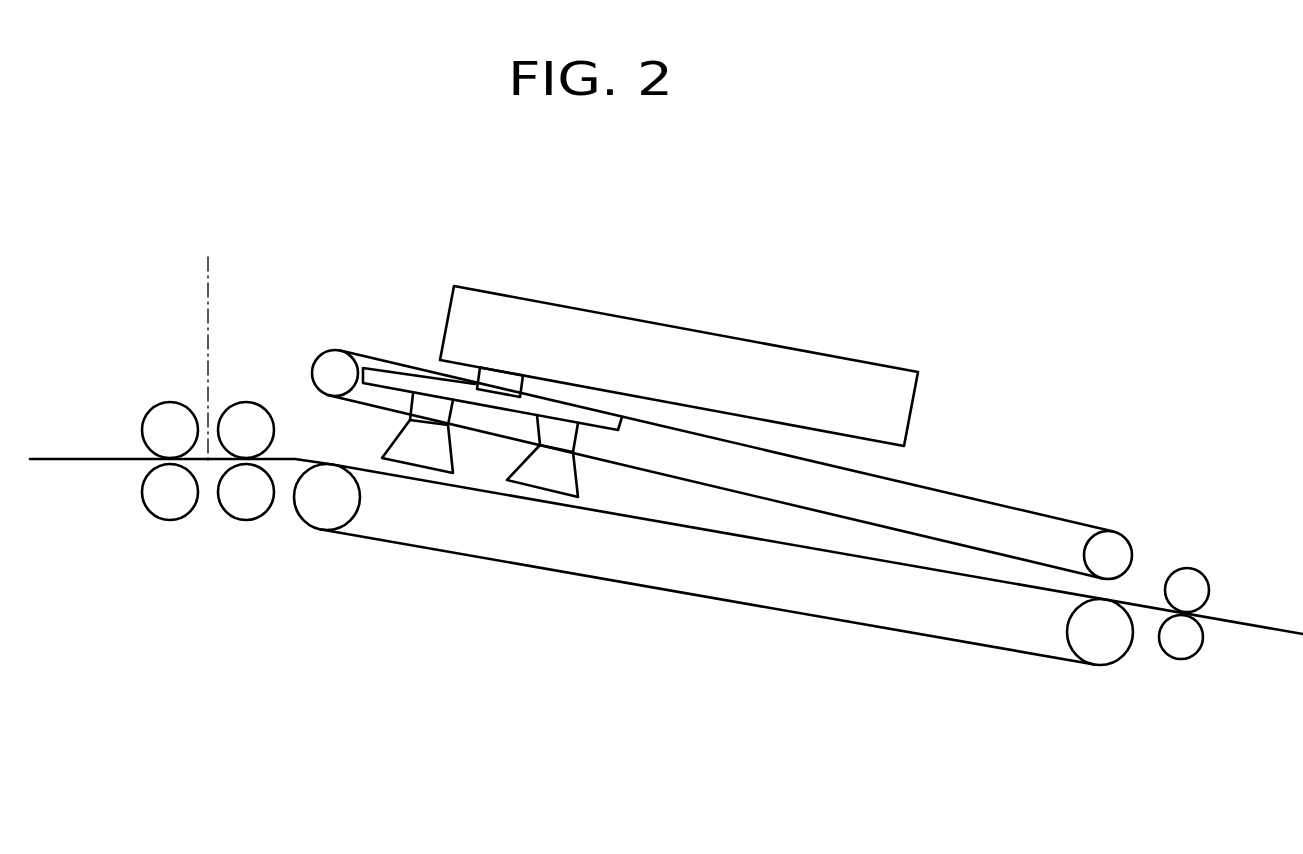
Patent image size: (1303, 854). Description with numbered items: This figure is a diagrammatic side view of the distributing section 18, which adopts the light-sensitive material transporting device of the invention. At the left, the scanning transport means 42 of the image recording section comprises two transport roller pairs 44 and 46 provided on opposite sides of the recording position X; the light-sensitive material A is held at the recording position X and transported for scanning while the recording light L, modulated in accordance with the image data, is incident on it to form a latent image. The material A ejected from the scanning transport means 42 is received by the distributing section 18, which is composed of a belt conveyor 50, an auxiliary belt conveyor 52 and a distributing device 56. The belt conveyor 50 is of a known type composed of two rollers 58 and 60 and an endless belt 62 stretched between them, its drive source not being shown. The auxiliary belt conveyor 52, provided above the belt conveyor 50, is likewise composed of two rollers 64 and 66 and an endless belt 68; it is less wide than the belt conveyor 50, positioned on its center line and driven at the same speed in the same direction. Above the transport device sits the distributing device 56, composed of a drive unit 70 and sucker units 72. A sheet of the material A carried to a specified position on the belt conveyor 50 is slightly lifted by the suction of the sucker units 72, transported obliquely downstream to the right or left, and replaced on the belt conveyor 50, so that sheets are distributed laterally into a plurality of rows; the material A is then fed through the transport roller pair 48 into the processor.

The distributing section 18 is at (725, 422).
The scanning transport means 42 is at (212, 500).
The transport roller pair 44 is at (167, 503).
The transport roller pair 46 is at (252, 425).
The transport roller pair 48 is at (1192, 592).
The belt conveyor 50 is at (724, 630).
The auxiliary belt conveyor 52 is at (753, 392).
The distributing device 56 is at (679, 316).
The roller 58 is at (323, 505).
The roller 60 is at (1100, 640).
The endless belt 62 is at (740, 605).
The roller 64 is at (342, 372).
The roller 66 is at (1120, 548).
The endless belt 68 is at (928, 488).
The drive unit 70 is at (733, 368).
The sucker units 72 is at (484, 470).
The recording light L is at (205, 327).
The recording position X is at (208, 466).
The light-sensitive material A is at (1252, 628).